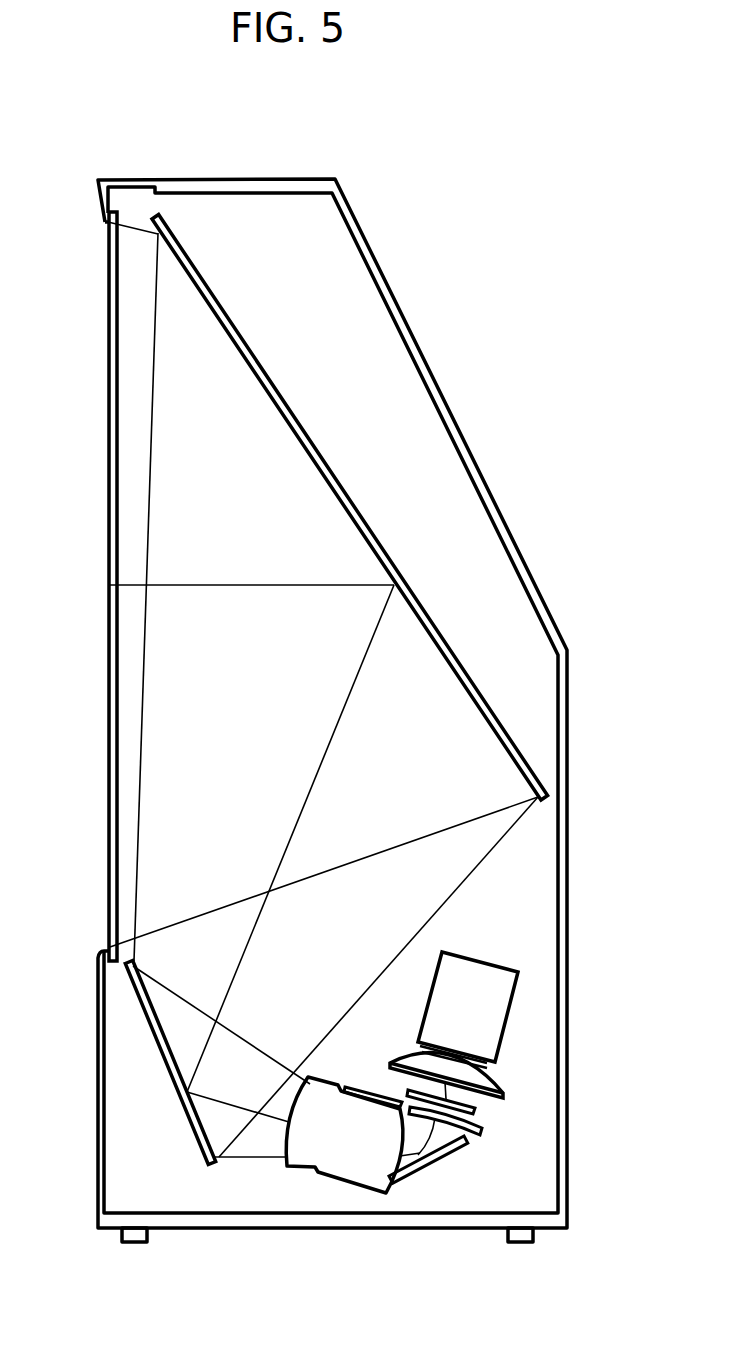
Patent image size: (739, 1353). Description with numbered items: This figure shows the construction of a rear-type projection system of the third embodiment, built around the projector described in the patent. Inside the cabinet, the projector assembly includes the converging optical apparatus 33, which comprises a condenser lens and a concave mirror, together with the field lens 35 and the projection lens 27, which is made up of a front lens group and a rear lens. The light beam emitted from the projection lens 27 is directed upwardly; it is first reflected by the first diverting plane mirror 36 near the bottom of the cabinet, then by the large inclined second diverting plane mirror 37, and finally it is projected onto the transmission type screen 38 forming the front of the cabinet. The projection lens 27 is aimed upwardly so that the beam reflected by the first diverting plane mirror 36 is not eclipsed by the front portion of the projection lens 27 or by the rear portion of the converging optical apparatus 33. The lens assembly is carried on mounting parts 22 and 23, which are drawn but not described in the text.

The mounting bracket 22 is at (468, 1146).
The adjusting plate 23 is at (482, 1108).
The projection lens 27 is at (417, 1117).
The converging optical apparatus 33 is at (518, 971).
The field lens 35 is at (503, 1092).
The first diverting plane mirror 36 is at (151, 1027).
The second diverting plane mirror 37 is at (229, 320).
The transmission type screen 38 is at (109, 324).